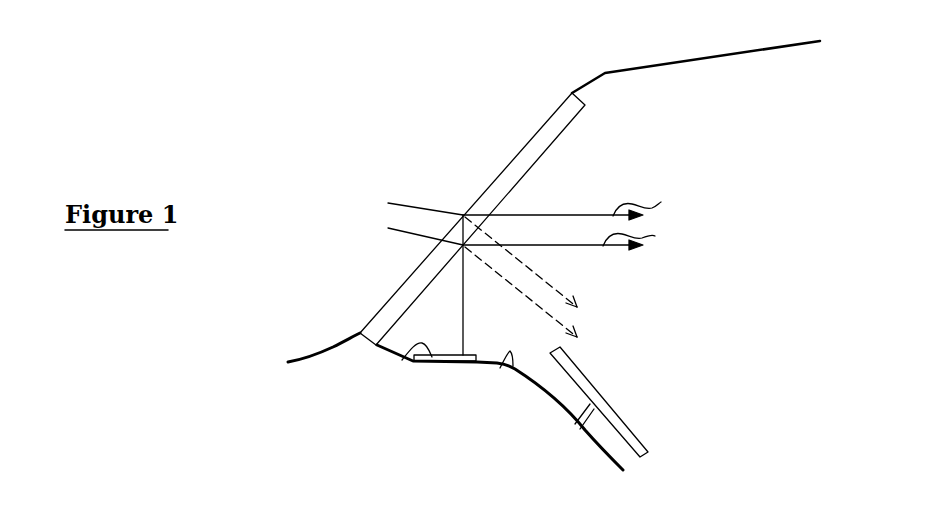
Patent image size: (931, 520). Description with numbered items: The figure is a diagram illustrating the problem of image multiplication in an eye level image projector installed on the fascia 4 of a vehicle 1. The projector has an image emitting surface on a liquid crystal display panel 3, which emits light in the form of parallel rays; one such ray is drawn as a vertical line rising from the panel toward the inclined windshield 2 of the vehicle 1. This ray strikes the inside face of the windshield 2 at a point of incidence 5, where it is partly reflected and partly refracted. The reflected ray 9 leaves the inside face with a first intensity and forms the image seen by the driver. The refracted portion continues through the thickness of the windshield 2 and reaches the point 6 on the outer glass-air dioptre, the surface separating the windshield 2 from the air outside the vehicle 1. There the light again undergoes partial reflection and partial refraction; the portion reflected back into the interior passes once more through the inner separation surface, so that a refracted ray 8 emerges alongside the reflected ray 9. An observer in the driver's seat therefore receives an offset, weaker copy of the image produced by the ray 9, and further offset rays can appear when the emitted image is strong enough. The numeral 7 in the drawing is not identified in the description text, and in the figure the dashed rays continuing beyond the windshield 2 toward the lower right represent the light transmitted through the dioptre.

The vehicle 1 is at (548, 57).
The windshield 2 is at (496, 178).
The liquid crystal display panel 3 is at (402, 360).
The fascia 4 is at (500, 368).
The point of incidence 5 is at (480, 285).
The point 6 is at (472, 243).
The second incident light beam 7 is at (472, 273).
The refracted ray 8 is at (570, 200).
The reflected ray 9 is at (570, 230).